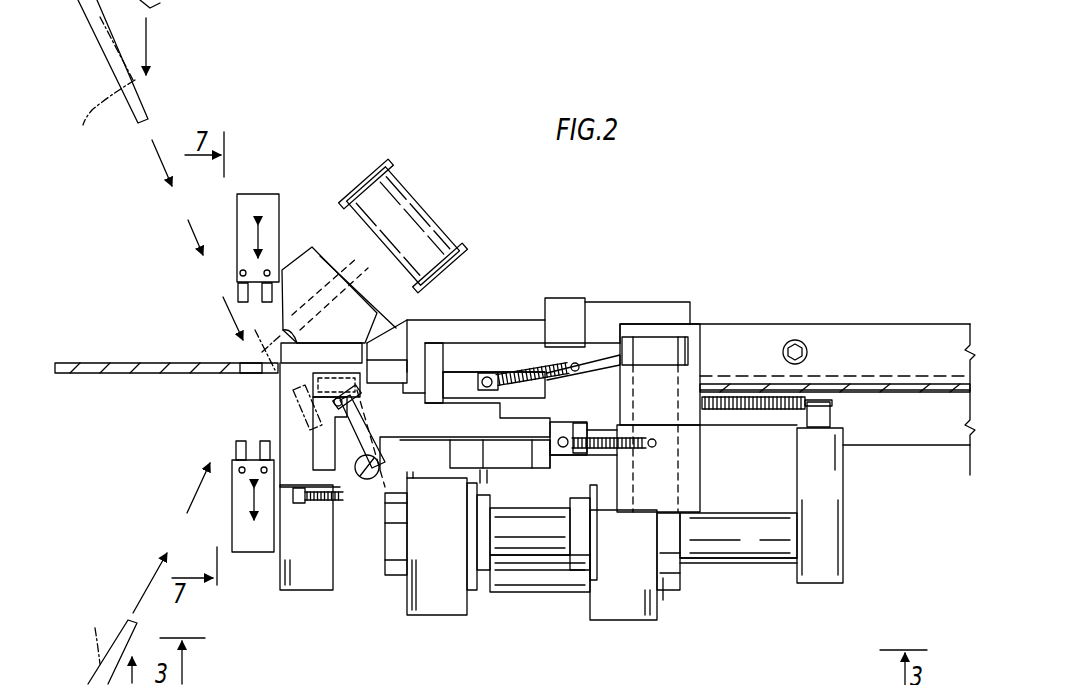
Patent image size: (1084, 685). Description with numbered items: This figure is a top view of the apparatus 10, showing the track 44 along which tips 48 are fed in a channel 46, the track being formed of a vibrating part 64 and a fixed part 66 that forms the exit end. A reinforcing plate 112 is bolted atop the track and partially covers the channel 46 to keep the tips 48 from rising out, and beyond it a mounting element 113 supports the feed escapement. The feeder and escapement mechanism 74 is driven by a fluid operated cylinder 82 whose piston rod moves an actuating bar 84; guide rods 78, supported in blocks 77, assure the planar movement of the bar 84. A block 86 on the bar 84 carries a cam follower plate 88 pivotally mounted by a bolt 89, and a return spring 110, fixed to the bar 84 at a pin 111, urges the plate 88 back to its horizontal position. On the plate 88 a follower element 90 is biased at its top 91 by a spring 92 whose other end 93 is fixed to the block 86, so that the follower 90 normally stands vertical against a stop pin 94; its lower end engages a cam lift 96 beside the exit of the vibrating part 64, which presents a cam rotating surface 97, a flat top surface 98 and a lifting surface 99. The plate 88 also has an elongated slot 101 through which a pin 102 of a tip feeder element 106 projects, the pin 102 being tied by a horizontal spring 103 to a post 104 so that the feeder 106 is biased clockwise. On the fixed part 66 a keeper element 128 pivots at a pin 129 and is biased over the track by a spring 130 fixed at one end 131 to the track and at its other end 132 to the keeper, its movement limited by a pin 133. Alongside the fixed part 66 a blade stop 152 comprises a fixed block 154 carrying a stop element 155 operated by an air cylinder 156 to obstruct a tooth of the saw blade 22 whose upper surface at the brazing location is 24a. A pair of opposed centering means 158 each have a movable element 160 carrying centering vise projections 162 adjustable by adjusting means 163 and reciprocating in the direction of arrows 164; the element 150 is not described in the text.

The apparatus 10 is at (676, 228).
The circular saw blade 22 is at (128, 363).
The tooth upper surface at brazing location 24a is at (255, 375).
The track 44 is at (947, 450).
The channel 46 is at (957, 378).
The tips 48 is at (866, 387).
The vibrating part of track 64 is at (900, 445).
The fixed part of track 66 is at (333, 352).
The feeder and escapement mechanism 74 is at (548, 295).
The blocks 77 is at (422, 607).
The guide rods 78 is at (728, 562).
The fluid operated cylinder 82 is at (483, 592).
The actuating bar 84 is at (840, 541).
The block 86 is at (712, 513).
The cam follower plate 88 is at (500, 357).
The bolt 89 is at (688, 347).
The follower element 90 is at (570, 456).
The top of follower element 91 is at (548, 428).
The spring 92 is at (630, 455).
The other end of spring 93 is at (656, 443).
The stop pin 94 is at (587, 422).
The cam lift 96 is at (450, 457).
The cam rotating surface 97 is at (545, 458).
The flat top surface 98 is at (508, 458).
The lifting surface 99 is at (467, 458).
The elongated slot 101 is at (485, 373).
The pin 102 is at (492, 378).
The horizontal spring 103 is at (545, 373).
The post 104 is at (580, 367).
The tip feeder element 106 is at (403, 370).
The return spring 110 is at (742, 408).
The pin 111 is at (823, 417).
The reinforcing plate 112 is at (914, 302).
The mounting element 113 is at (565, 298).
The keeper element 128 is at (323, 425).
The pivot pin 129 is at (352, 465).
The spring 130 is at (325, 505).
The one end of spring 131 is at (312, 500).
The other end of spring 132 is at (363, 490).
The pin 133 is at (322, 378).
The cartridge 150 is at (160, 2).
The blade stop or tooth positioning means 152 is at (368, 150).
The fixed block 154 is at (343, 258).
The stop element 155 is at (290, 335).
The air cylinder 156 is at (435, 200).
The centering means 158 is at (267, 193).
The laterally movable element 160 is at (238, 226).
The centering vise projections 162 is at (267, 297).
The adjusting means 163 is at (267, 273).
The arrows 164 is at (262, 240).